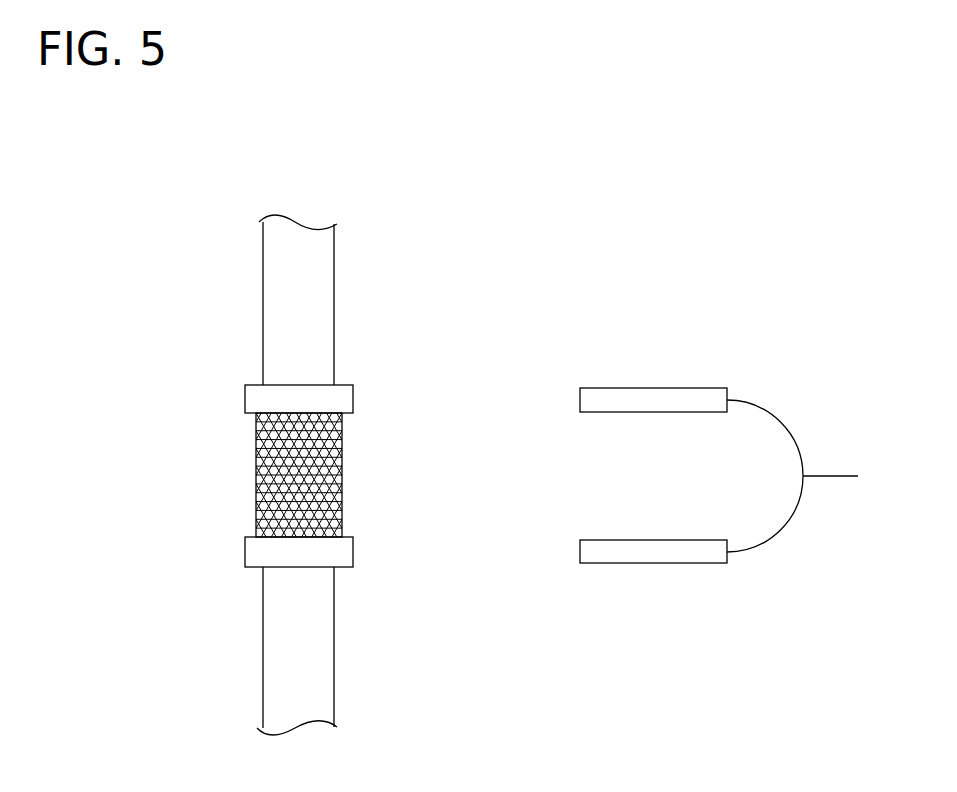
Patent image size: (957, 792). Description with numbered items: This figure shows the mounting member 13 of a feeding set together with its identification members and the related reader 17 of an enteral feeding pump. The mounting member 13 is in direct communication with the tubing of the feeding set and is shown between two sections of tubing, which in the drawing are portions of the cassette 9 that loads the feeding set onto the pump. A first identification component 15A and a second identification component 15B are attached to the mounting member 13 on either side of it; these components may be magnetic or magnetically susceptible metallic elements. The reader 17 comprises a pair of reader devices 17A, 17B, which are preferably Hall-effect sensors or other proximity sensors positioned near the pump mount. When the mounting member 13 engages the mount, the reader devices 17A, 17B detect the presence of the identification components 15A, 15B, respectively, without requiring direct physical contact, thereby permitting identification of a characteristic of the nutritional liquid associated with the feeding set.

The cassette 9 is at (335, 289).
The mounting member 13 is at (333, 480).
The first identification component 15A is at (257, 399).
The second identification component 15B is at (257, 549).
The reader 17 is at (719, 459).
The reader device 17A is at (655, 388).
The reader device 17B is at (653, 563).